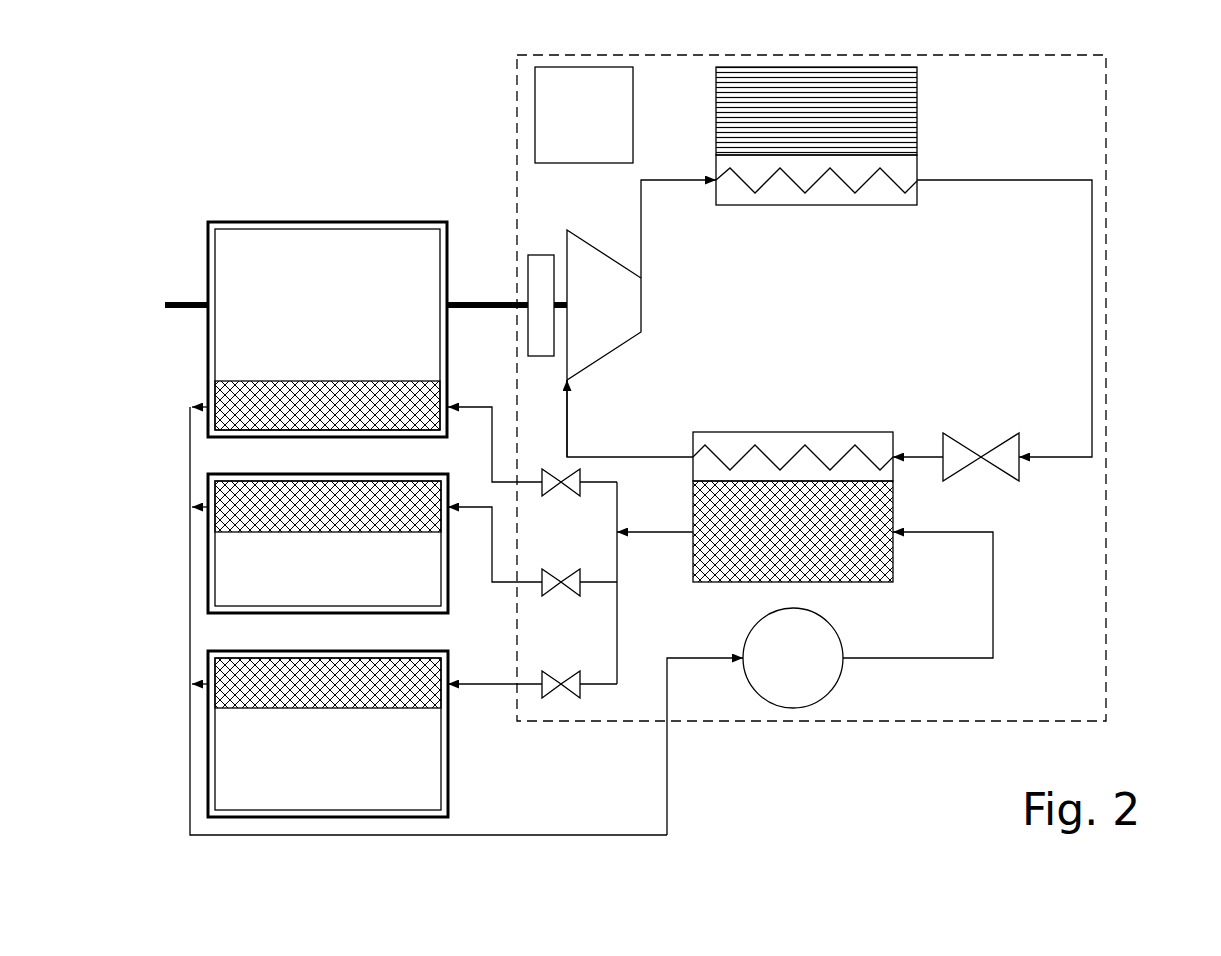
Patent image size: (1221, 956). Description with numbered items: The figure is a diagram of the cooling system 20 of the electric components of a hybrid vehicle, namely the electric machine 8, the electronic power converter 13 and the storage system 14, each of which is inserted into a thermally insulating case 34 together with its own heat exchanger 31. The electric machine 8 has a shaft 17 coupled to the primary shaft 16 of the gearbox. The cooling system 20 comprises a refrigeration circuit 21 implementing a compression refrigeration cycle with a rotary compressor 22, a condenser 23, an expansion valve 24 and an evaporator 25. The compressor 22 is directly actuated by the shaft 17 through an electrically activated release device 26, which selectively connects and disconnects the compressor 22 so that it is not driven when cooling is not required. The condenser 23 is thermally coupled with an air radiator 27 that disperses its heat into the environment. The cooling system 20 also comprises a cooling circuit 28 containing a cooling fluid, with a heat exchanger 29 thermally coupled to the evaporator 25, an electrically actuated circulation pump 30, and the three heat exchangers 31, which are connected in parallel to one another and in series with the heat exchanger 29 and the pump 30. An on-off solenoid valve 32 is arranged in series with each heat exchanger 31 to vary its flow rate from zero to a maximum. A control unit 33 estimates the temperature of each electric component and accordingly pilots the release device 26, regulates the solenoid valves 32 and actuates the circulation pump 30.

The electric machine 8 is at (327, 329).
The electronic power converter 13 is at (328, 543).
The storage system 14 is at (328, 734).
The primary shaft 16 is at (184, 298).
The shaft of the electric machine 17 is at (486, 298).
The cooling system 20 is at (936, 752).
The refrigeration circuit 21 is at (1122, 314).
The compressor 22 is at (604, 305).
The condenser 23 is at (775, 188).
The expansion valve 24 is at (1007, 437).
The evaporator 25 is at (835, 440).
The release device 26 is at (544, 262).
The air radiator 27 is at (816, 111).
The cooling circuit 28 is at (724, 748).
The heat exchanger 29 is at (793, 531).
The circulation pump 30 is at (793, 658).
The heat exchangers 31 is at (328, 544).
The on-off solenoid valve 32 is at (571, 485).
The control unit 33 is at (584, 115).
The thermally insulating case 34 is at (313, 222).